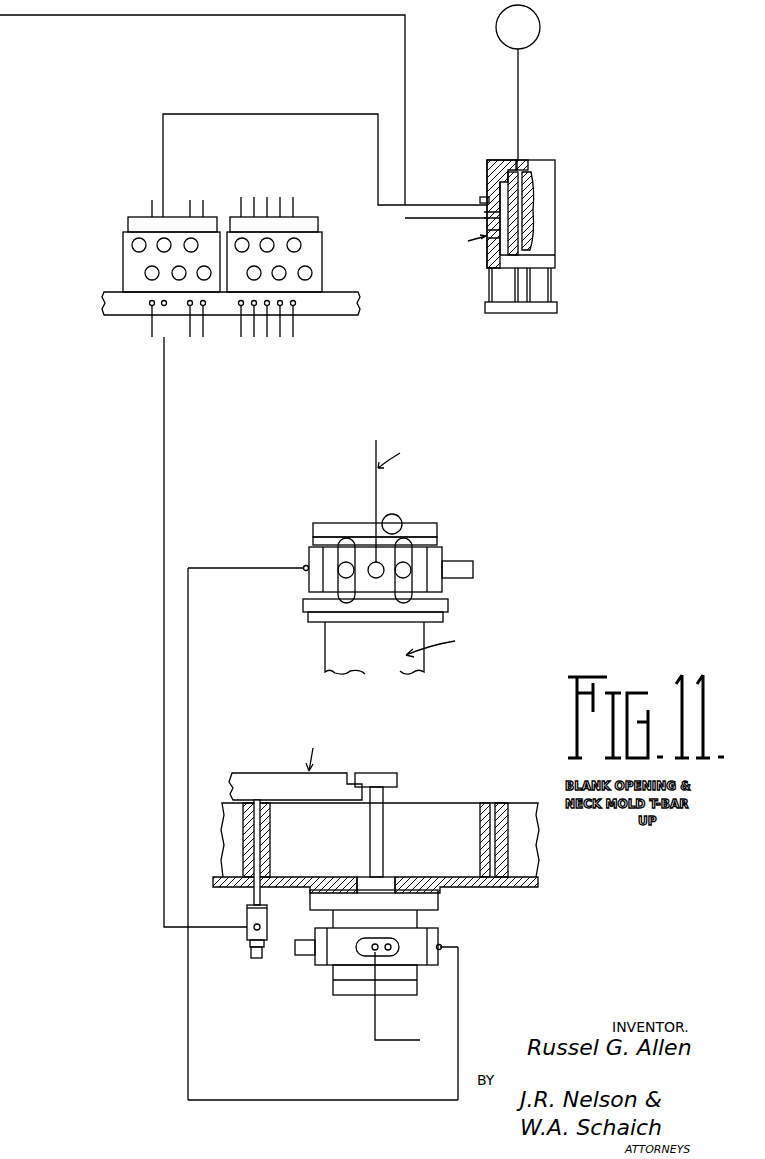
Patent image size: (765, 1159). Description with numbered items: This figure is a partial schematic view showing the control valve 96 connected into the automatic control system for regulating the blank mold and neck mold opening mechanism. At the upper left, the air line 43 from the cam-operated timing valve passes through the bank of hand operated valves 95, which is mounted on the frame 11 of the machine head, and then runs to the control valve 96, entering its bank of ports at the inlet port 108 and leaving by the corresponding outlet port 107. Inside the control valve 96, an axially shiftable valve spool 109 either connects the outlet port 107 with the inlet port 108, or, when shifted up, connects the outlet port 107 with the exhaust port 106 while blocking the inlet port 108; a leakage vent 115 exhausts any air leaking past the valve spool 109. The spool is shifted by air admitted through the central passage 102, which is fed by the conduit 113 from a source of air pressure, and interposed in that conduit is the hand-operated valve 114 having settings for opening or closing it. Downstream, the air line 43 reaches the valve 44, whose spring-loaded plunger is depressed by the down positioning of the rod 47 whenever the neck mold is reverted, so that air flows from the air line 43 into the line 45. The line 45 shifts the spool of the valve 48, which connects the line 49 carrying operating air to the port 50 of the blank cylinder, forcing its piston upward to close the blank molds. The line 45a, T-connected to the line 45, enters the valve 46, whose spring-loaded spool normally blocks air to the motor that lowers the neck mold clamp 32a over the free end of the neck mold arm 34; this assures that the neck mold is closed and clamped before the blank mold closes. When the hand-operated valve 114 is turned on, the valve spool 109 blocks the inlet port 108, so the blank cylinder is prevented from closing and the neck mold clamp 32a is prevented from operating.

The frame 11 is at (112, 305).
The neck mold clamp 32a is at (390, 778).
The neck mold arm 34 is at (325, 780).
The air line 43 is at (405, 95).
The valve 44 is at (267, 940).
The line 45 is at (190, 701).
The line 45a is at (313, 1101).
The valve 46 is at (321, 962).
The rod 47 is at (255, 863).
The valve 48 is at (309, 560).
The line 49 is at (377, 502).
The port 50 is at (455, 562).
The bank of hand operated valves 95 is at (123, 246).
The control valve 96 is at (564, 210).
The central passage 102 is at (522, 244).
The exhaust port 106 is at (488, 182).
The outlet port 107 is at (480, 200).
The inlet port 108 is at (487, 215).
The valve spool 109 is at (505, 248).
The conduit 113 is at (520, 125).
The hand-operated valve 114 is at (496, 18).
The leakage vent 115 is at (492, 248).